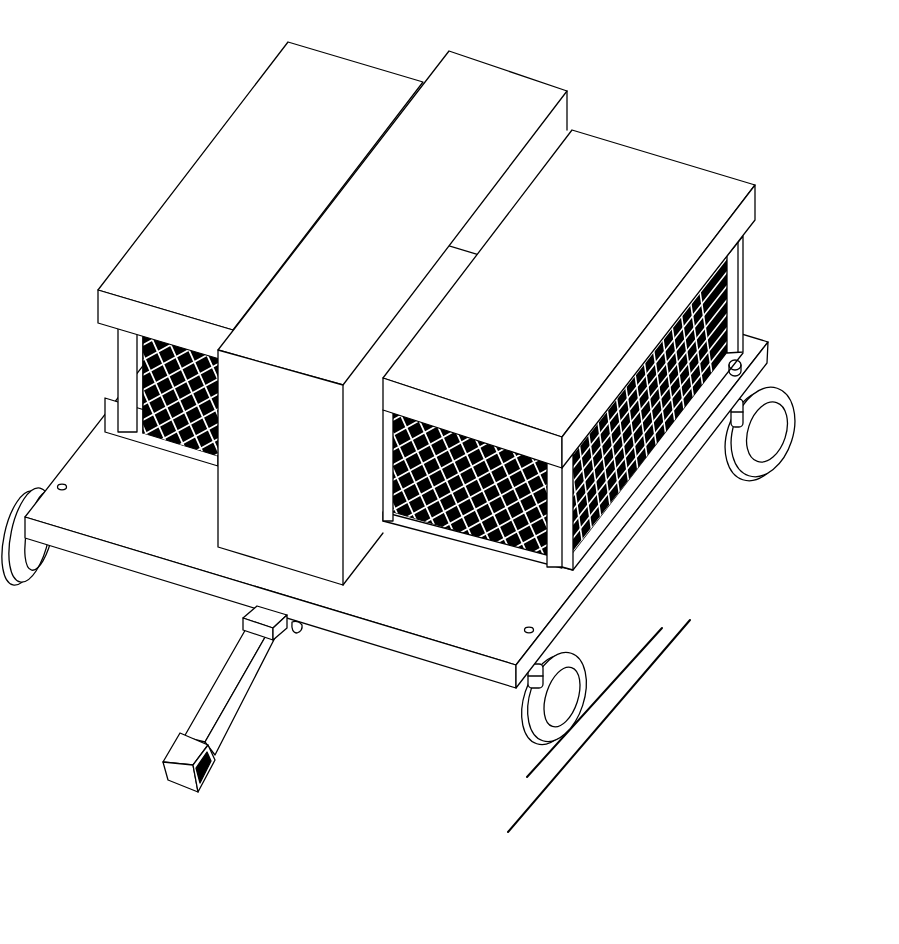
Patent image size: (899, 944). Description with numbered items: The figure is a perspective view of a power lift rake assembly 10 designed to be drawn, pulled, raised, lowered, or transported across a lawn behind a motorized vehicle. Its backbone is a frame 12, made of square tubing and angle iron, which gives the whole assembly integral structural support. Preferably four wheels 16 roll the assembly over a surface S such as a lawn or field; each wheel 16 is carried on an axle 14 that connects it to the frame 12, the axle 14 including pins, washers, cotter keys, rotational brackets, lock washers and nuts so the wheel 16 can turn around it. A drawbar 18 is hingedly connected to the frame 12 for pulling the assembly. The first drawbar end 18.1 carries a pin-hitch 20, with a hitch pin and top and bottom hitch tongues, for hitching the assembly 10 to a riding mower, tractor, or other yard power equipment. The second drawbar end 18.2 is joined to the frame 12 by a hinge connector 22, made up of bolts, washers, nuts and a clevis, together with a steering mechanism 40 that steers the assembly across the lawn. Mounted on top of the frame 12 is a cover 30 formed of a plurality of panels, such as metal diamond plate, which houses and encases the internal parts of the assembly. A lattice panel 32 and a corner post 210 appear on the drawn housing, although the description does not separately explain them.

The power lift rake assembly 10 is at (680, 127).
The frame 12 is at (413, 647).
The axle 14 is at (740, 397).
The wheel 16 is at (792, 432).
The drawbar 18 is at (258, 688).
The first drawbar end 18.1 is at (218, 715).
The second drawbar end 18.2 is at (253, 638).
The pin-hitch 20 is at (174, 788).
The hinge connector 22 is at (175, 703).
The cover 30 is at (590, 163).
The lattice panel 32 is at (522, 547).
The steering mechanism 40 is at (303, 640).
The corner post 210 is at (731, 273).
The surface S is at (578, 753).